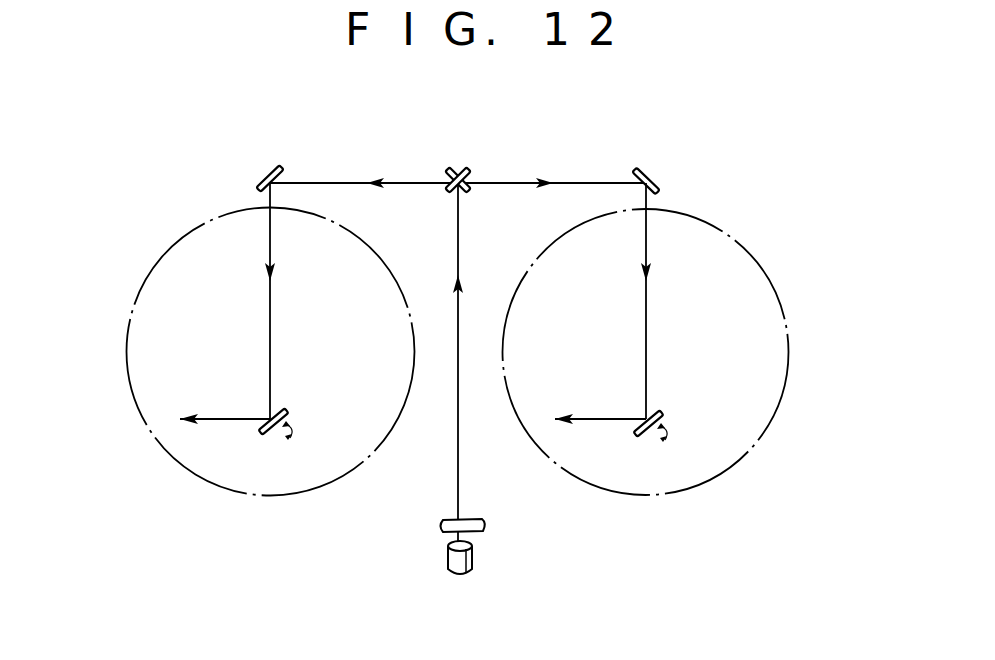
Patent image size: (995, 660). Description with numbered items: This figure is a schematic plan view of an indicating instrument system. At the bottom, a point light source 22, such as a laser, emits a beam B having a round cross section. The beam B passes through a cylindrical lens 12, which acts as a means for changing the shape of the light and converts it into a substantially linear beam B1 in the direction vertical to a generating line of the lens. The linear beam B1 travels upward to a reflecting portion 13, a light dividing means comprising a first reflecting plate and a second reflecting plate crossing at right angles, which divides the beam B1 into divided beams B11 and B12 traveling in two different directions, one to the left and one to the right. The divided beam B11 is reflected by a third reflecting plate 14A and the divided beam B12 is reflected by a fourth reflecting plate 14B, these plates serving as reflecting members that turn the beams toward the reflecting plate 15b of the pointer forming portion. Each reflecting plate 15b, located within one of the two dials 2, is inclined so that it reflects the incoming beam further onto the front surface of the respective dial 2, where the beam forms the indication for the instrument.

The dial 2 is at (171, 252).
The cylindrical lens 12 is at (438, 528).
The reflecting portion 13 is at (476, 158).
The third reflecting plate 14A is at (276, 166).
The fourth reflecting plate 14B is at (648, 168).
The reflecting plate 15b is at (263, 436).
The point light source 22 is at (467, 576).
The beam B is at (468, 537).
The substantially linear beam B1 is at (458, 470).
The divided beam B11 is at (357, 180).
The divided beam B12 is at (577, 179).